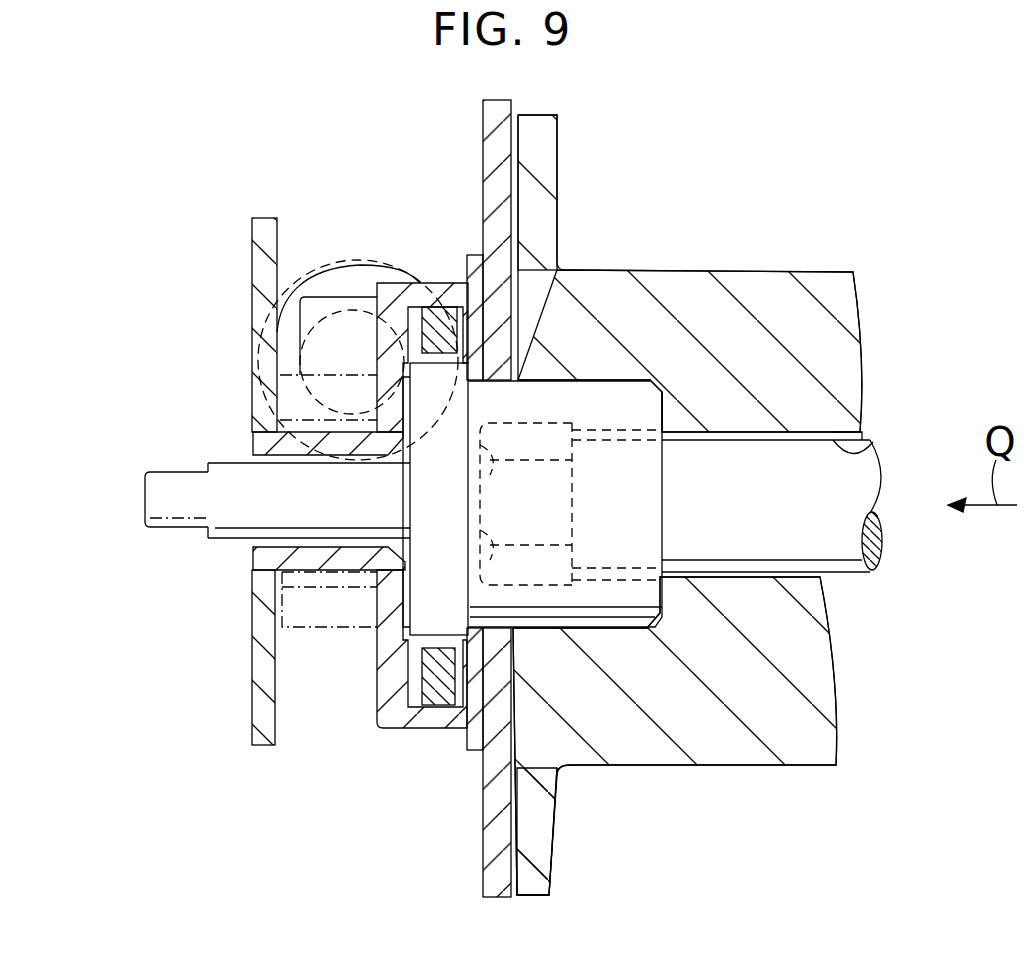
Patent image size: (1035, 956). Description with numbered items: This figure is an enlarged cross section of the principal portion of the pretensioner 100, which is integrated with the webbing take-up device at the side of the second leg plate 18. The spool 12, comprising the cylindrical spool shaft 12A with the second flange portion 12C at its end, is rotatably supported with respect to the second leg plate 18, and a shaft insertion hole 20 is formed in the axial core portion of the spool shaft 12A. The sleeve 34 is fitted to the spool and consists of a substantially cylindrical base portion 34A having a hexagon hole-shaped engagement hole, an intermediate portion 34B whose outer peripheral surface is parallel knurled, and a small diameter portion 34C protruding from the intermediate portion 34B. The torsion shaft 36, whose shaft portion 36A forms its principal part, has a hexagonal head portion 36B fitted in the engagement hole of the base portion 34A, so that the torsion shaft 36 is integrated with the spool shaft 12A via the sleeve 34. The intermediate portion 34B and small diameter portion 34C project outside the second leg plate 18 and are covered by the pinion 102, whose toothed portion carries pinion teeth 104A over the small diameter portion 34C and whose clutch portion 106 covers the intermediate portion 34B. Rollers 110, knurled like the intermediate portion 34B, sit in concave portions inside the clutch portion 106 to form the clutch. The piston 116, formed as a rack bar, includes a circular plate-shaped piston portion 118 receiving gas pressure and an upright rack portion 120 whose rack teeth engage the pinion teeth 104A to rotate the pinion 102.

The spool 12 is at (741, 505).
The spool shaft 12A is at (847, 300).
The second flange portion 12C is at (543, 157).
The second leg plate 18 is at (488, 855).
The shaft insertion hole 20 is at (870, 440).
The sleeve 34 is at (223, 545).
The base portion 34A is at (618, 615).
The intermediate portion 34B is at (403, 603).
The small diameter portion 34C is at (227, 527).
The torsion shaft 36 is at (735, 528).
The shaft portion 36A is at (843, 562).
The head portion 36B is at (558, 505).
The pretensioner 100 is at (278, 495).
The pinion 102 is at (387, 735).
The pinion teeth 104A is at (302, 623).
The clutch portion 106 is at (440, 720).
The roller 110 is at (433, 317).
The piston 116 is at (378, 255).
The piston portion 118 is at (345, 275).
The rack portion 120 is at (305, 318).